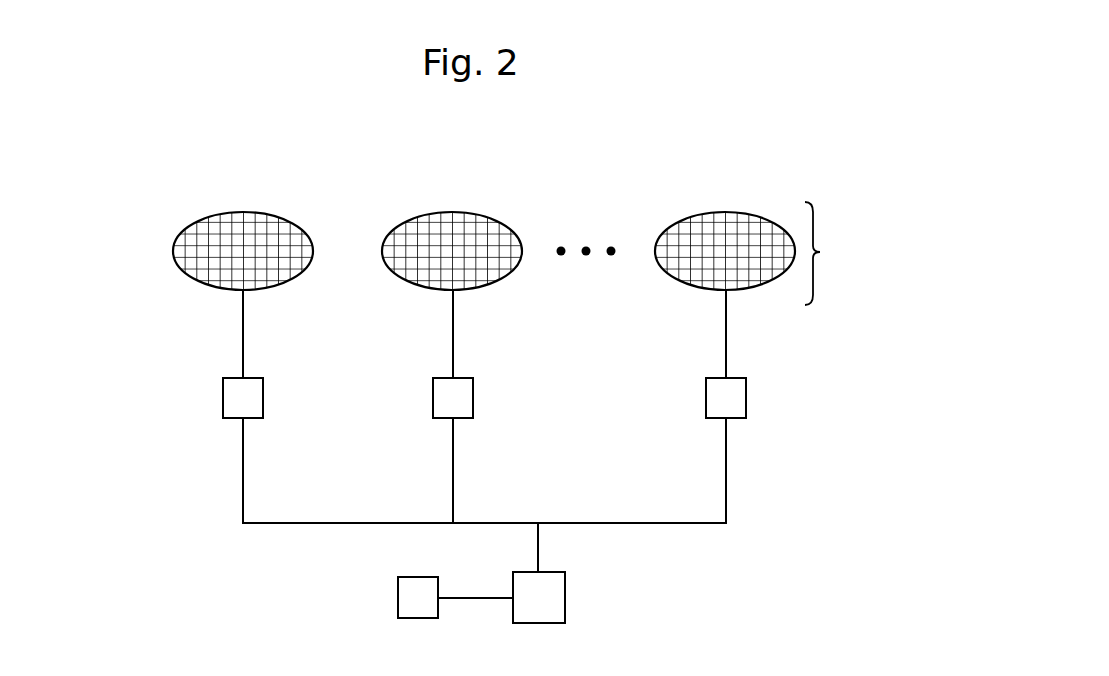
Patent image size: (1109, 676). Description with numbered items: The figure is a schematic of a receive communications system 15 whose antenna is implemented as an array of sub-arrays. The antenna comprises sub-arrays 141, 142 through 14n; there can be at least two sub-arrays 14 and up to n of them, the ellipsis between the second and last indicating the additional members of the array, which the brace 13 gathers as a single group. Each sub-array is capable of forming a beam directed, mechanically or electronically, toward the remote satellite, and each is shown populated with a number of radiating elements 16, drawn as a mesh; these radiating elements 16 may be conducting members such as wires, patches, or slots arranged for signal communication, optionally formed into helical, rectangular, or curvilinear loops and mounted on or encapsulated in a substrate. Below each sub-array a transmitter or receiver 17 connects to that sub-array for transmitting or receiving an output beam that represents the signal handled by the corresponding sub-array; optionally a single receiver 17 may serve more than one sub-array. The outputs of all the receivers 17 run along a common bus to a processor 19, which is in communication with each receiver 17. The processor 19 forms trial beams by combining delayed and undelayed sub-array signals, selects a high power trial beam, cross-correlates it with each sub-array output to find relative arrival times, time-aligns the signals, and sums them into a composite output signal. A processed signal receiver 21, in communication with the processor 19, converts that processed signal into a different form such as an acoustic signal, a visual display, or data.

The plurality of sensors / sensor array 13 is at (832, 252).
The sensor 14 is at (461, 222).
The first sub-array 141 is at (196, 234).
The second sub-array 142 is at (418, 208).
The n-th sub-array 14n is at (745, 195).
The communications system 15 is at (622, 163).
The radiating elements 16 is at (177, 265).
The transmitter or receiver 17 is at (223, 398).
The processor 19 is at (565, 593).
The processed signal receiver 21 is at (398, 597).